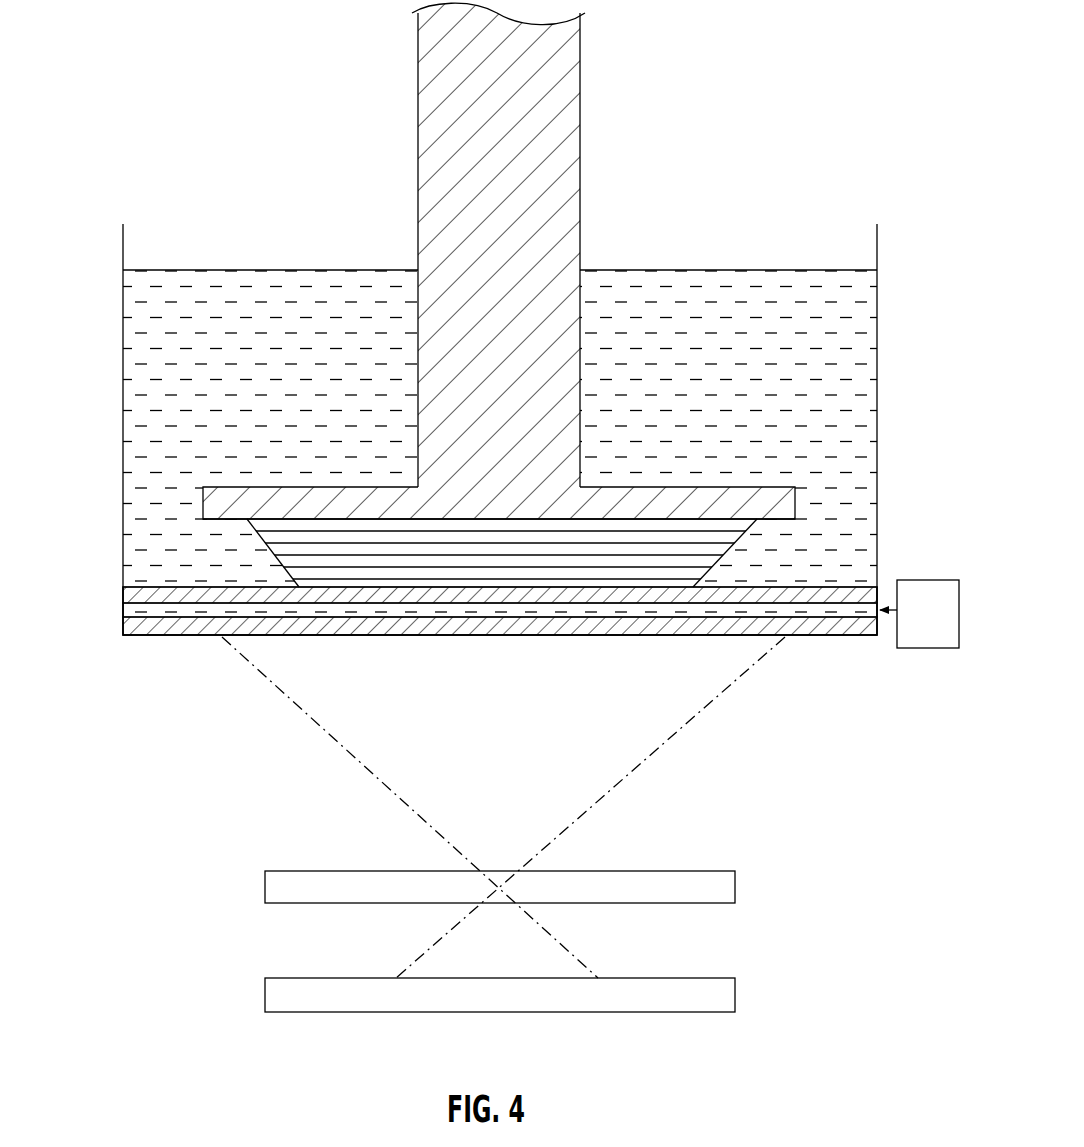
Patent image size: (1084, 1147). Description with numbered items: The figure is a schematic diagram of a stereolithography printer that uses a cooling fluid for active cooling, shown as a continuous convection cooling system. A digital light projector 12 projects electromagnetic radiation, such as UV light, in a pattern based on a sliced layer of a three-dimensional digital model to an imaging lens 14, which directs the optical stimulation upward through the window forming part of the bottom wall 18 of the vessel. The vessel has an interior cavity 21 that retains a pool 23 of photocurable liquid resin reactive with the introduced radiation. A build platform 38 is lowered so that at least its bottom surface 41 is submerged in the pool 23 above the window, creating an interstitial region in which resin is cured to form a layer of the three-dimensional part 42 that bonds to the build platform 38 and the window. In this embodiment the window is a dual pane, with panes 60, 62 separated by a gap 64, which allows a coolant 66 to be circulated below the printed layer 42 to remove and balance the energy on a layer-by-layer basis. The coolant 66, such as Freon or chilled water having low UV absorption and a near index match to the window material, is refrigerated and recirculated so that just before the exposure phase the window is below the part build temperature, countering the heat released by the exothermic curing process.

The digital light projector 12 is at (737, 990).
The imaging lens 14 is at (737, 882).
The bottom wall 18 is at (116, 621).
The interior cavity 21 is at (122, 380).
The pool 23 is at (140, 318).
The build platform 38 is at (780, 497).
The bottom surface 41 is at (772, 520).
The 3D part 42 is at (667, 580).
The pane 60 is at (127, 598).
The pane 62 is at (147, 627).
The gap 64 is at (148, 613).
The coolant 66 is at (913, 648).